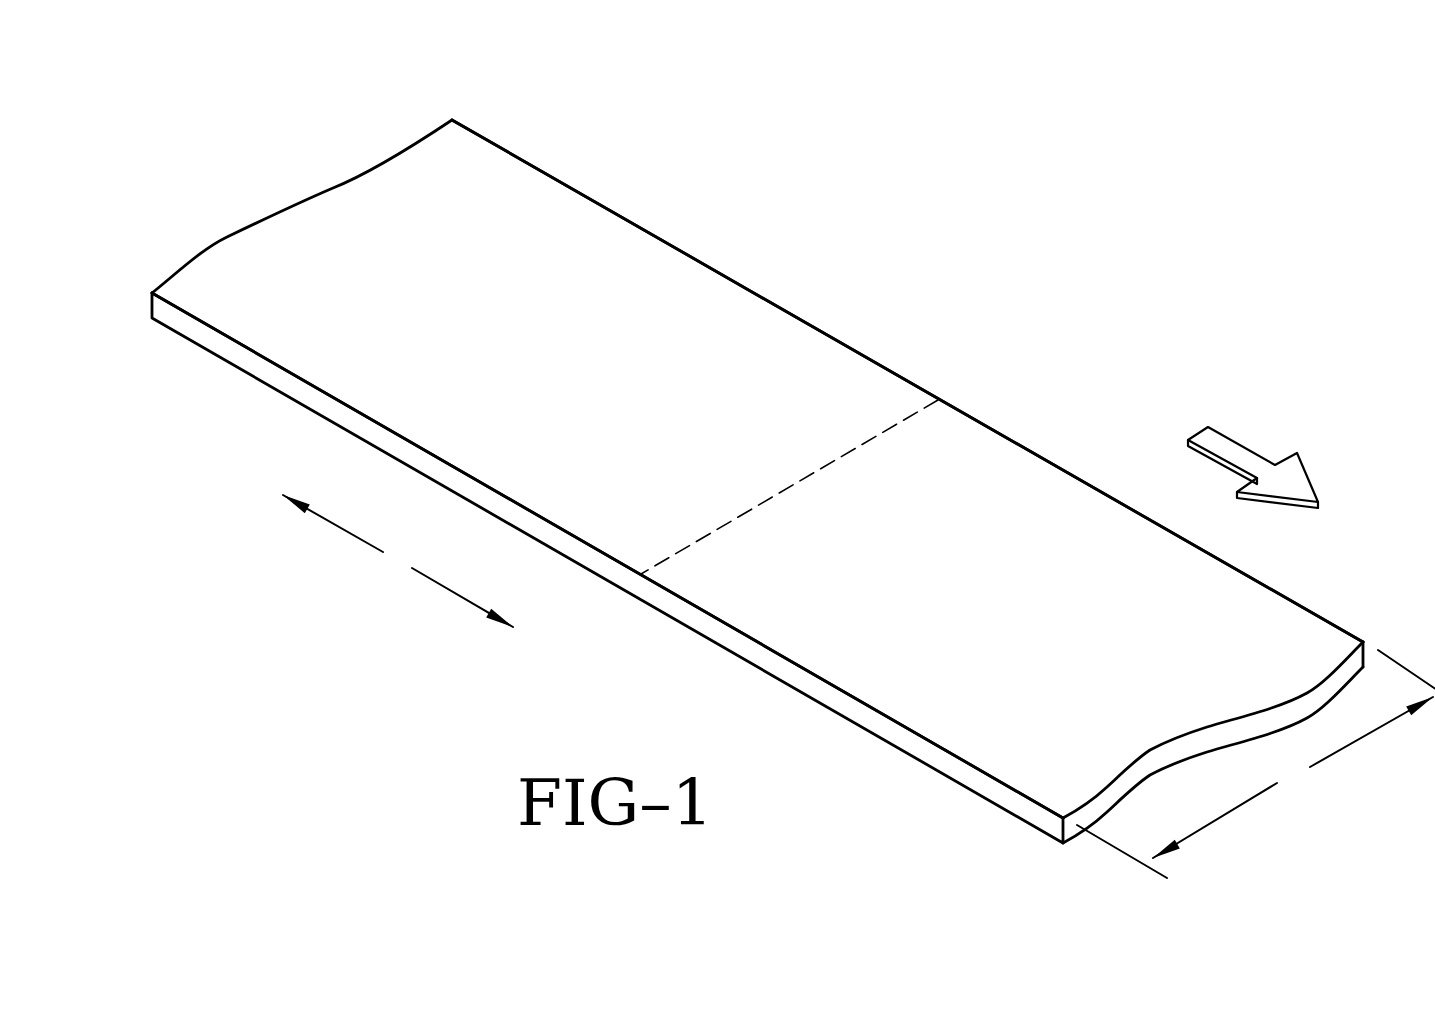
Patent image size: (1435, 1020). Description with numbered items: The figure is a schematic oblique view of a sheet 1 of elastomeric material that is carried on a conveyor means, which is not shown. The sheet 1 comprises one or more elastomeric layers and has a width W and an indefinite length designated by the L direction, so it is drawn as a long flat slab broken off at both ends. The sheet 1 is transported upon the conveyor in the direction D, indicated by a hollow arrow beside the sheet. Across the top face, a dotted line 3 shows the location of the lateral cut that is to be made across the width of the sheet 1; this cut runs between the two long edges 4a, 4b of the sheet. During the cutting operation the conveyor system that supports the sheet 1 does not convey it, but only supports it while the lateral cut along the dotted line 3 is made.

The sheet 1 is at (767, 201).
The dotted line 3 is at (840, 457).
The first longitudinal edge 4a is at (308, 384).
The second longitudinal edge 4b is at (583, 193).
The direction D is at (1240, 453).
The L direction L is at (398, 561).
The width W is at (1256, 764).